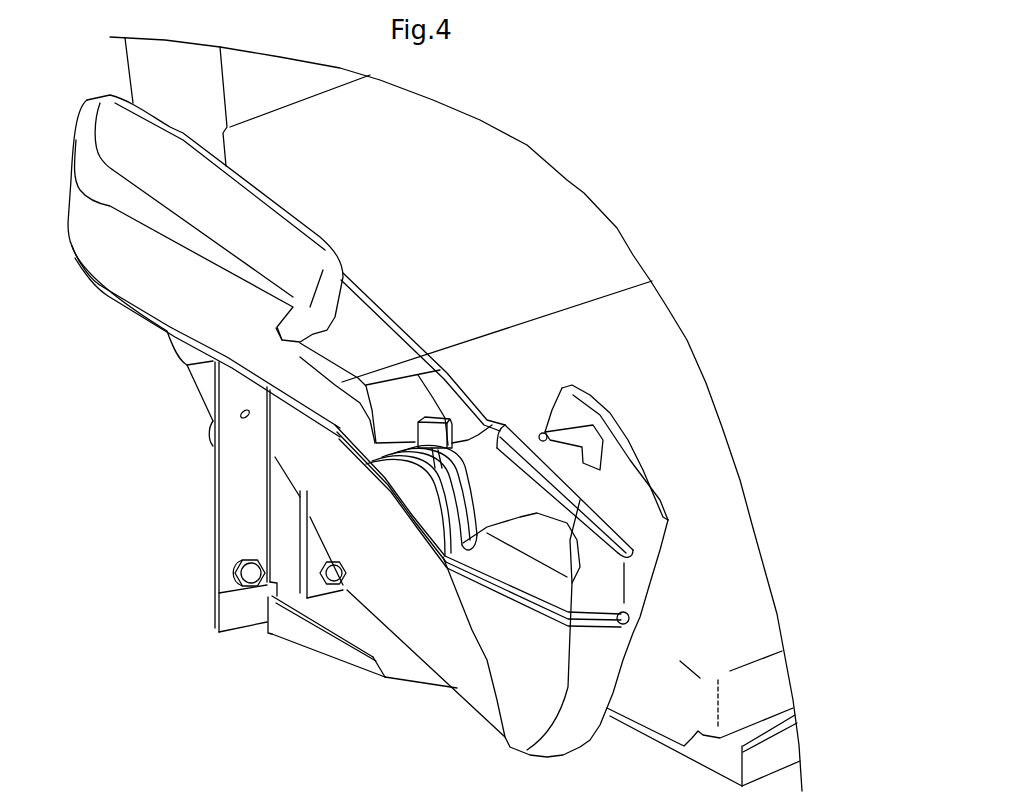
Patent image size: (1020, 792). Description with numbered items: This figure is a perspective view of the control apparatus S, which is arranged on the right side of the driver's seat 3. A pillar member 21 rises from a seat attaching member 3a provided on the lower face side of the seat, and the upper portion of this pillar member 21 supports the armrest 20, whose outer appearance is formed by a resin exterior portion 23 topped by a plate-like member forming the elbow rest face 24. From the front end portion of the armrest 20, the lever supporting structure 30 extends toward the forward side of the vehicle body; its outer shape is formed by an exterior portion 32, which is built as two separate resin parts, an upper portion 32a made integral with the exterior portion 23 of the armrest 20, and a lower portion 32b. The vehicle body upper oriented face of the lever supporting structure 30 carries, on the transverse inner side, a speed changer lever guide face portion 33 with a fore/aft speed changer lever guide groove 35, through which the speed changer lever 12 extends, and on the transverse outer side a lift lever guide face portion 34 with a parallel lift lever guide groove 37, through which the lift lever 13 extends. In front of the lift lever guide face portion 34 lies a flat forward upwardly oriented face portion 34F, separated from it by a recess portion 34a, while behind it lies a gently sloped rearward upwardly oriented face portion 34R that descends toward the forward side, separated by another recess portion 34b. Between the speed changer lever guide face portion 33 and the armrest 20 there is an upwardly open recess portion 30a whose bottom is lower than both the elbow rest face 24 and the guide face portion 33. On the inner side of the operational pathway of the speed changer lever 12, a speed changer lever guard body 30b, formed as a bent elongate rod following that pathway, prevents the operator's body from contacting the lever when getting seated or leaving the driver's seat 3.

The driver's seat 3 is at (517, 155).
The seat attaching member 3a is at (768, 733).
The speed changer lever 12 is at (597, 403).
The lift lever 13 is at (426, 418).
The armrest 20 is at (219, 270).
The pillar member 21 is at (213, 502).
The exterior portion 23 is at (97, 250).
The elbow rest face 24 is at (257, 220).
The lever supporting structure 30 is at (527, 513).
The recess portion 30a is at (443, 380).
The speed changer lever guard body 30b is at (647, 480).
The exterior portion 32 is at (685, 614).
The upper portion 32a is at (615, 590).
The lower portion 32b is at (607, 657).
The speed changer lever guide face portion 33 is at (593, 513).
The lift lever guide face portion 34 is at (436, 506).
The recess portion 34a is at (460, 543).
The recess portion 34b is at (382, 455).
The forward upwardly oriented face portion 34F is at (522, 538).
The rearward upwardly oriented face portion 34R is at (368, 383).
The speed changer lever guide groove 35 is at (633, 550).
The lift lever guide groove 37 is at (463, 512).
The control apparatus S is at (640, 385).